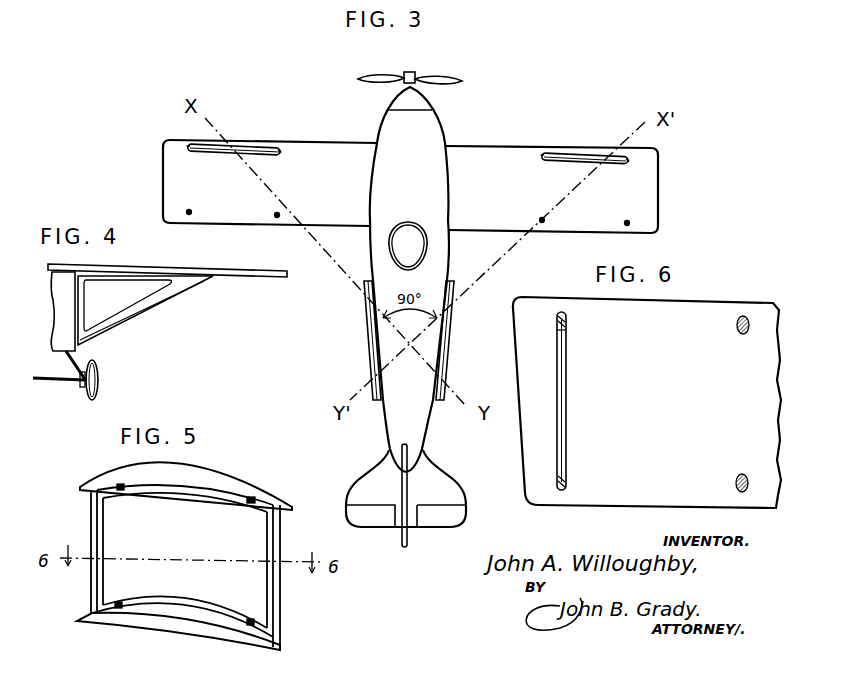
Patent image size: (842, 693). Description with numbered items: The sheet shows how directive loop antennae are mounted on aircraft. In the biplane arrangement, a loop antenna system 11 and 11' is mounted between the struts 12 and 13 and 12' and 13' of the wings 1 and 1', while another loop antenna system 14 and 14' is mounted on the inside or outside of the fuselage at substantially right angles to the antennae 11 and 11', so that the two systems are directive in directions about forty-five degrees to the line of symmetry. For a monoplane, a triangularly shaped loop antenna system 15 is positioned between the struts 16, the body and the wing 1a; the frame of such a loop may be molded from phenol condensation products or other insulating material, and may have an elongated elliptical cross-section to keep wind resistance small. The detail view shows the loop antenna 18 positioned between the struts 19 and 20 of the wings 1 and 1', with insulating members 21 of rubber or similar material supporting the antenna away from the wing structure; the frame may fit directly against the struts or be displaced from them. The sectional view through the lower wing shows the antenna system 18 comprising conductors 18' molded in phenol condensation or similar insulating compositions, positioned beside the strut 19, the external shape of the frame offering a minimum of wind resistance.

In FIG. 3, the wing 1 is at (410, 309).
In FIG. 5, the wing 1 is at (186, 484).
In FIG. 4, the wing 1a is at (170, 265).
In FIG. 5, the wing 1' is at (178, 636).
In FIG. 6, the wing 1' is at (647, 418).
In FIG. 3, the loop antenna system 11 is at (234, 130).
In FIG. 3, the loop antenna system 11' is at (585, 140).
In FIG. 3, the strut 12 is at (151, 158).
In FIG. 3, the strut 12' is at (518, 139).
In FIG. 3, the strut 13 is at (288, 170).
In FIG. 3, the strut 13' is at (666, 172).
In FIG. 3, the loop antenna system 14 is at (350, 340).
In FIG. 4, the loop antenna system 14 is at (46, 311).
In FIG. 3, the loop antenna system 14' is at (462, 340).
In FIG. 4, the triangularly shaped loop antenna system 15 is at (123, 305).
In FIG. 4, the strut 16 is at (153, 303).
In FIG. 5, the loop antenna 18 is at (200, 561).
In FIG. 6, the loop antenna 18 is at (578, 401).
In FIG. 6, the conductor 18' is at (580, 344).
In FIG. 5, the strut 19 is at (91, 587).
In FIG. 6, the strut 19 is at (567, 318).
In FIG. 5, the strut 20 is at (280, 607).
In FIG. 6, the strut 20 is at (565, 483).
In FIG. 5, the insulating member 21 is at (120, 485).